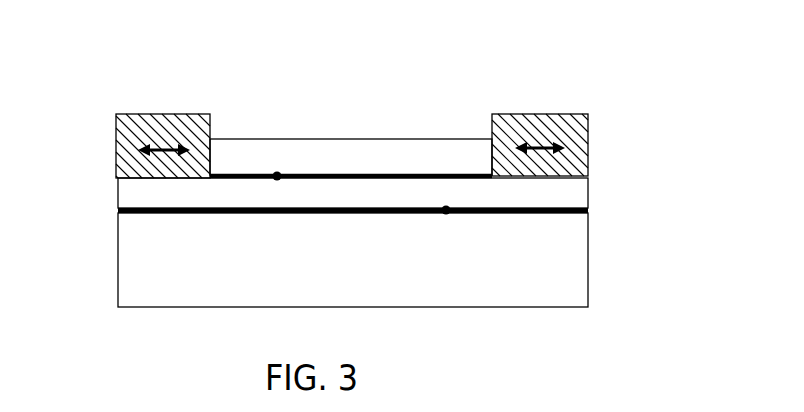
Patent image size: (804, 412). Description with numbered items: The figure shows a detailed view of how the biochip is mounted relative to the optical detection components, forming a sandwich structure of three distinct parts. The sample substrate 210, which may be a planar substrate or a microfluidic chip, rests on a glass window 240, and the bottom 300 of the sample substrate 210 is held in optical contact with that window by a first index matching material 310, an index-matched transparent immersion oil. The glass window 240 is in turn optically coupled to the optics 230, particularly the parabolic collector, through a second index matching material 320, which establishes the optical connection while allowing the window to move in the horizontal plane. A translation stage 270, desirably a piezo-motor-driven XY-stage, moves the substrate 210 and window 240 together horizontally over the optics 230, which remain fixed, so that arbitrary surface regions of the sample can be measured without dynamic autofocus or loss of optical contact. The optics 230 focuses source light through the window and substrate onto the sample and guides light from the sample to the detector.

The sample substrate 210 is at (245, 152).
The optics 230 is at (483, 301).
The glass window 240 is at (568, 197).
The translation stage 270 is at (561, 121).
The bottom of the sample substrate 300 is at (462, 172).
The first index matching material 310 is at (277, 176).
The second index matching material 320 is at (446, 210).